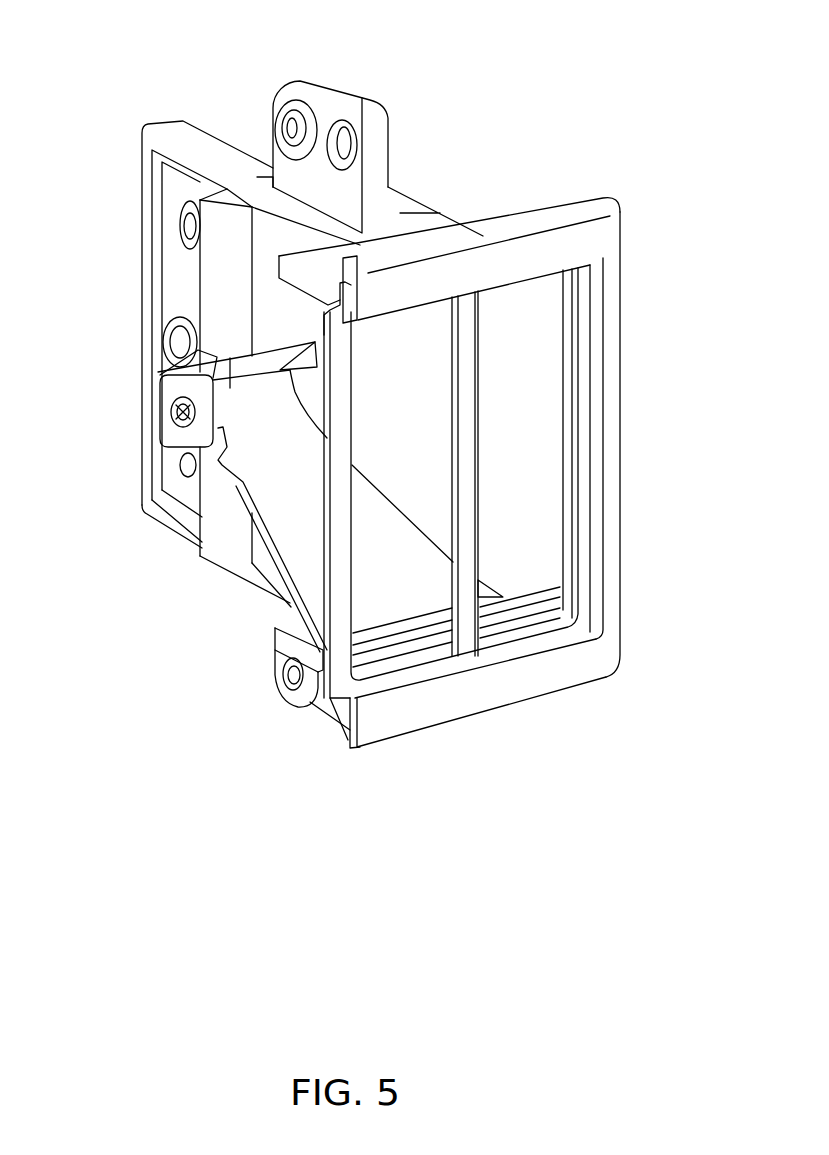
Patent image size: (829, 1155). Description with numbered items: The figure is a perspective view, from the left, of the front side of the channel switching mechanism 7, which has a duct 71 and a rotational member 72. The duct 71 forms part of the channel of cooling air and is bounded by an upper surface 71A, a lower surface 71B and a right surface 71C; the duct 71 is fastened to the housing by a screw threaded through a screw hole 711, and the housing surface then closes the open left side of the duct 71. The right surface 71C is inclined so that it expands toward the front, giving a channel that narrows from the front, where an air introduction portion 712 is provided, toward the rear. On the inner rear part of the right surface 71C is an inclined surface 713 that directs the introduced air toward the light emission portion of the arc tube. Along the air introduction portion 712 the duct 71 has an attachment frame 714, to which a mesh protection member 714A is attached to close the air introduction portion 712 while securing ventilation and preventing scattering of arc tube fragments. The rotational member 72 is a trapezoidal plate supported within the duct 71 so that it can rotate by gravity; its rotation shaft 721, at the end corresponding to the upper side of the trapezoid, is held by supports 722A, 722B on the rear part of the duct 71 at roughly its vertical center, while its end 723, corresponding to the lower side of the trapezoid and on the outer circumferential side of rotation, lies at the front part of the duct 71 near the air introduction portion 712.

The channel switching mechanism 7 is at (150, 70).
The duct 71 is at (481, 455).
The upper surface 71A is at (405, 232).
The lower surface 71B is at (298, 690).
The right surface 71C is at (545, 343).
The screw hole 711 is at (287, 123).
The air introduction portion 712 is at (563, 443).
The inclined surface 713 is at (213, 283).
The attachment frame 714 is at (593, 665).
The protection member 714A is at (498, 590).
The rotational member 72 is at (285, 536).
The rotation shaft 721 is at (180, 417).
The support 722A is at (303, 366).
The support 722B is at (170, 392).
The end 723 is at (407, 607).